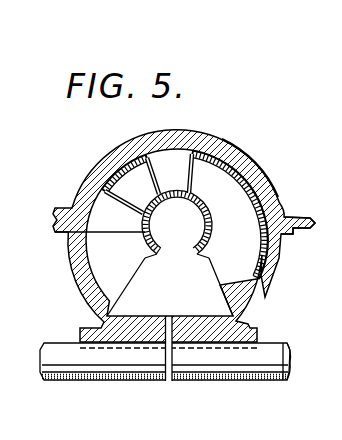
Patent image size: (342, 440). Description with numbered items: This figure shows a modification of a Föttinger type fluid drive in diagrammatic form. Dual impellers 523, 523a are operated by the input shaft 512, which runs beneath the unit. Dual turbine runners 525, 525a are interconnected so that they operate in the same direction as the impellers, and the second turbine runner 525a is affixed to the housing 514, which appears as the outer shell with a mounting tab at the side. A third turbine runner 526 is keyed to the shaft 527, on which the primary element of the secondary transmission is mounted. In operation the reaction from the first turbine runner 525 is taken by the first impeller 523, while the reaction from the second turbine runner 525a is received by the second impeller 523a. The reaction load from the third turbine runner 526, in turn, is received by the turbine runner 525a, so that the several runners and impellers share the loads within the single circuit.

The input shaft 512 is at (47, 345).
The housing 514 is at (280, 217).
The first impeller 523 is at (100, 273).
The second impeller 523a is at (97, 168).
The first turbine runner 525 is at (93, 215).
The second turbine runner 525a is at (173, 160).
The third turbine runner 526 is at (230, 185).
The shaft 527 is at (283, 345).